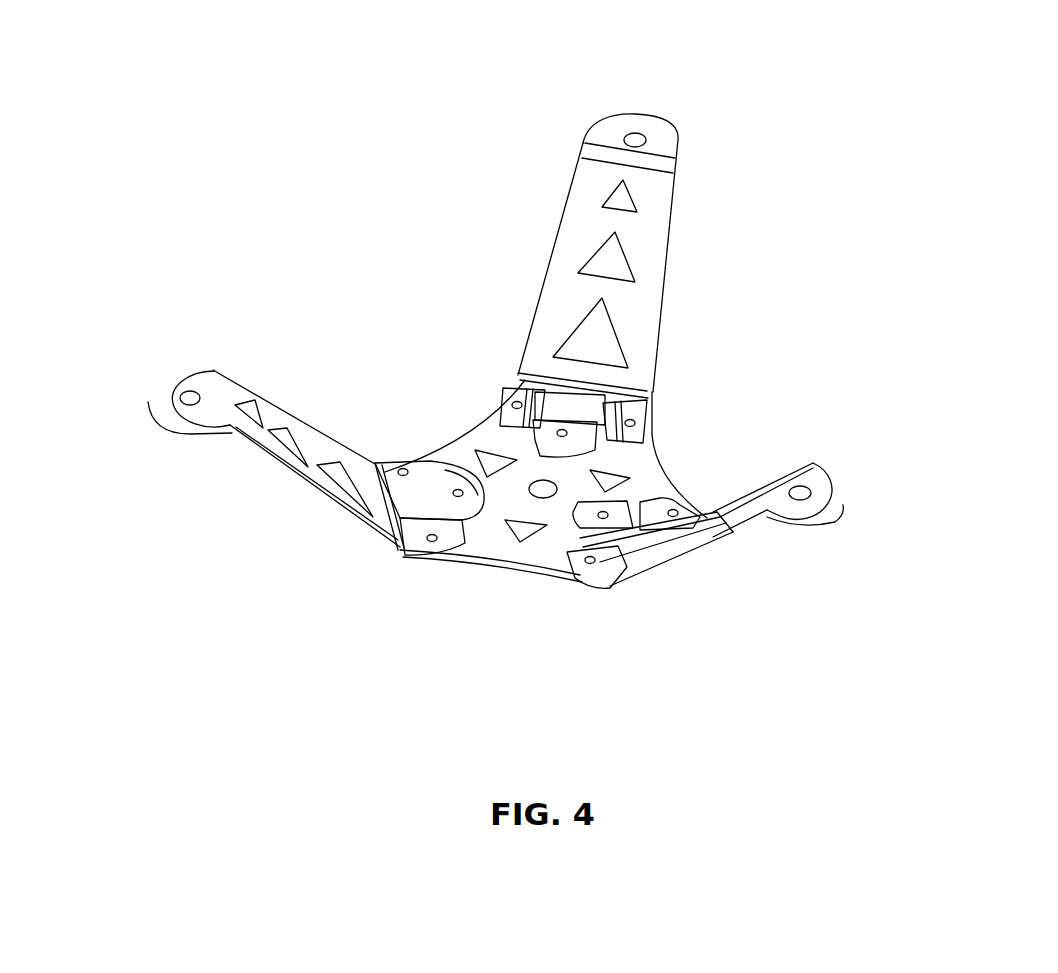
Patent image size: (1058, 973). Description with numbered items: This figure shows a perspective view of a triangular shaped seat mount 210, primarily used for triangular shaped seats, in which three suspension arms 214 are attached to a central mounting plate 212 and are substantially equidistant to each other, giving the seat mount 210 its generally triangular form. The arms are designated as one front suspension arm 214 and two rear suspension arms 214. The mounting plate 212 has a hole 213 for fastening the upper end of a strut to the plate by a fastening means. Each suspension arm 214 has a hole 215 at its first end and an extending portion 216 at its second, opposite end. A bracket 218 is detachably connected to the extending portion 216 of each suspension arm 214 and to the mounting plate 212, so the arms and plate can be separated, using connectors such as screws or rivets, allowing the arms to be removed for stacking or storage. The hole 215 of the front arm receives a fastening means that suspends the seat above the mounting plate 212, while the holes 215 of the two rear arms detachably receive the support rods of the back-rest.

The triangular shaped seat mount 210 is at (734, 116).
The mounting plate 212 is at (640, 463).
The hole 213 is at (545, 492).
The suspension arm 214 is at (648, 300).
The hole 215 is at (633, 142).
The extending portion 216 is at (522, 392).
The bracket 218 is at (412, 504).